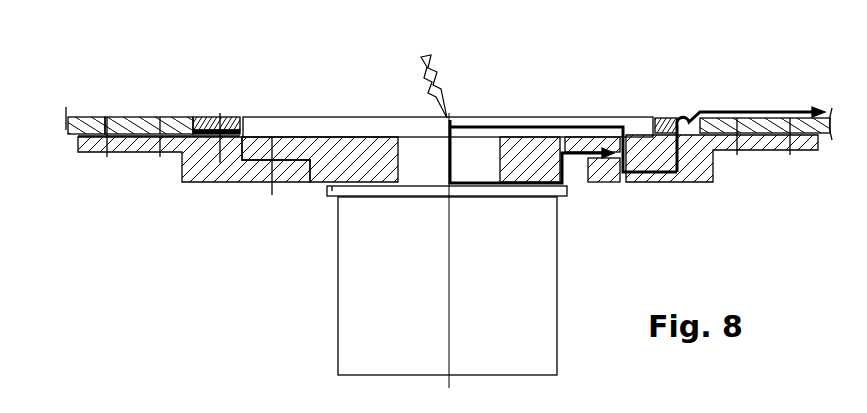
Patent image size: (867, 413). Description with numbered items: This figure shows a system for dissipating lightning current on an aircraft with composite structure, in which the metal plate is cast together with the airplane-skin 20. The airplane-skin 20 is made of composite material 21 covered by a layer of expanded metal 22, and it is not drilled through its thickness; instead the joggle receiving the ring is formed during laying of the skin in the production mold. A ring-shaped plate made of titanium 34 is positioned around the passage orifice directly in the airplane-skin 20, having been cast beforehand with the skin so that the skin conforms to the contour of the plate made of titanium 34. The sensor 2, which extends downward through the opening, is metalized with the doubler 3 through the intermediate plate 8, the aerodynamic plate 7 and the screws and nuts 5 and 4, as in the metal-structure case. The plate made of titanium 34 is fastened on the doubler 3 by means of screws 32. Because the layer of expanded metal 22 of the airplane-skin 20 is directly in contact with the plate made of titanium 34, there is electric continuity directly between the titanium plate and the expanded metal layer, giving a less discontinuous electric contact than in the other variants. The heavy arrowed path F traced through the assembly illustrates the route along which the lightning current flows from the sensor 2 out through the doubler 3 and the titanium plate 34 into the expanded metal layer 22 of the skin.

The airplane-skin 20 is at (440, 80).
The layer of expanded metal 22 is at (82, 117).
The composite material 21 is at (97, 117).
The ring-shaped plate made of titanium 34 is at (203, 115).
The aerodynamic plate 7 is at (307, 125).
The intermediate plate 8 is at (365, 148).
The doubler 3 is at (207, 178).
The screws 5 is at (568, 190).
The sensor 2 is at (447, 250).
The nuts 4 is at (622, 183).
The screws 32 is at (677, 183).
The fluid flow F is at (515, 110).